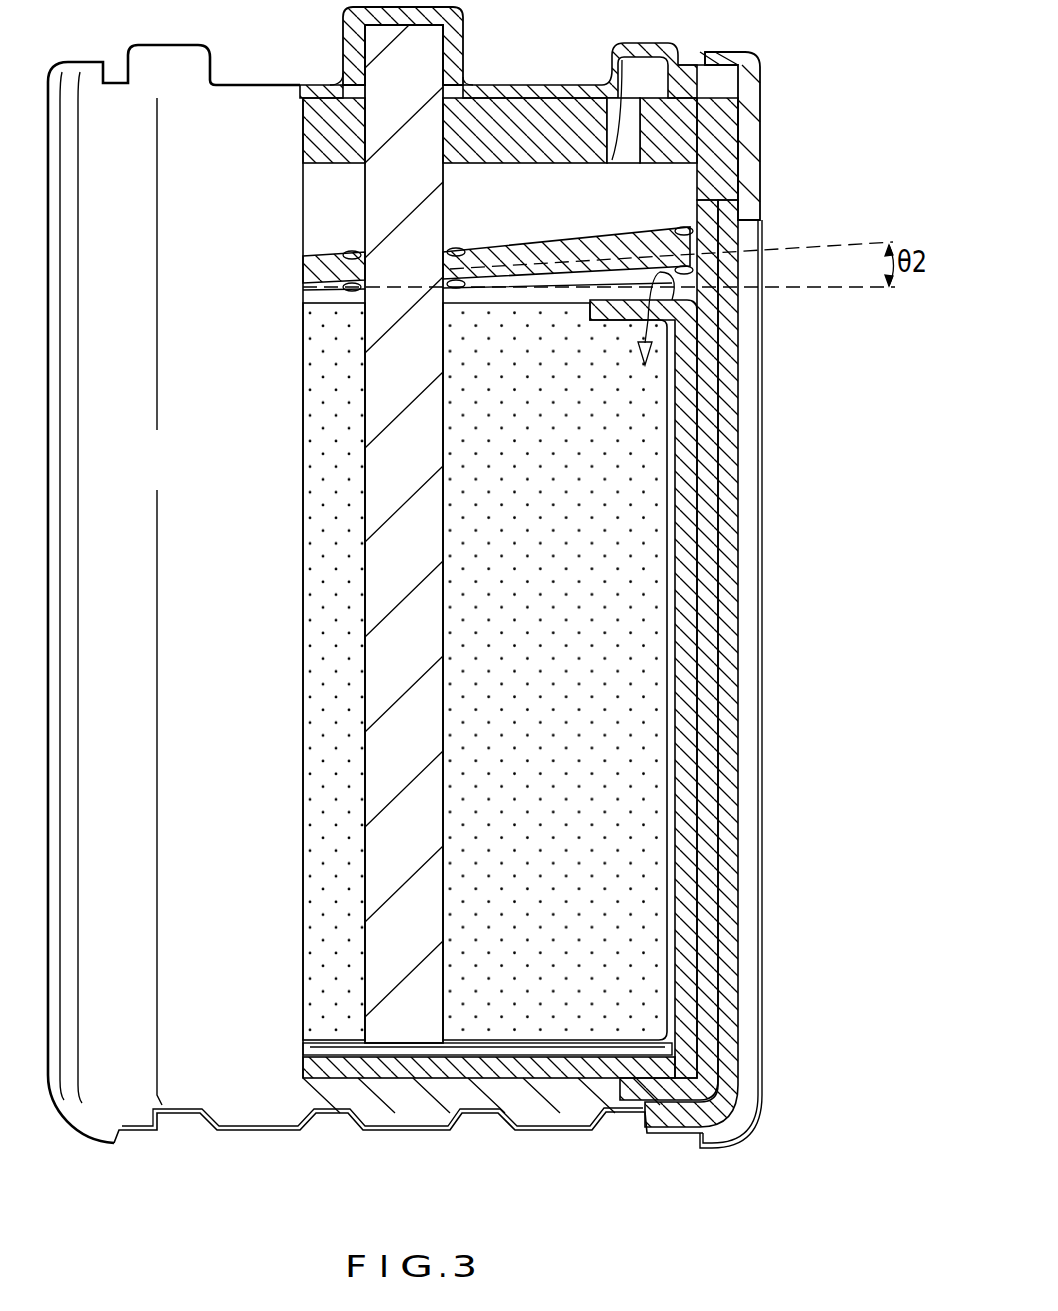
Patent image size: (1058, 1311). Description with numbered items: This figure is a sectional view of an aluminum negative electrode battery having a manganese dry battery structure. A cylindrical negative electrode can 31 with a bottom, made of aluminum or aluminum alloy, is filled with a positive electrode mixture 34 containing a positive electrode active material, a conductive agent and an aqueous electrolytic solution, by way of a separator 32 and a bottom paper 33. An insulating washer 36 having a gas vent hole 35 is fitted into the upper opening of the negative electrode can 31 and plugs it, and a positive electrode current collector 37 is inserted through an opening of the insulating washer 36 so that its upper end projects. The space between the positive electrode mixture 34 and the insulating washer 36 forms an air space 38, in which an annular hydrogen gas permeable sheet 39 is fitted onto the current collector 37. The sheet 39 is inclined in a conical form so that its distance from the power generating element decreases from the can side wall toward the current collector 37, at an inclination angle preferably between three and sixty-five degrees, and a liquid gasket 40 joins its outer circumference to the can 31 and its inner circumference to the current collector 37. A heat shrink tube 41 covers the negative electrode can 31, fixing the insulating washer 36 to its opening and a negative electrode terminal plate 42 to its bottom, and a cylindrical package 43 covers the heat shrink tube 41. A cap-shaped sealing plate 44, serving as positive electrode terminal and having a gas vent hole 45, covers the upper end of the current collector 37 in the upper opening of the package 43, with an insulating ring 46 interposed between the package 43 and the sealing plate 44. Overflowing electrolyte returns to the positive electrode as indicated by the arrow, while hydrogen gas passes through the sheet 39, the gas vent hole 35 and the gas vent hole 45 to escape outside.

The negative electrode can 31 is at (703, 851).
The separator 32 is at (683, 774).
The bottom paper 33 is at (465, 1050).
The positive electrode mixture 34 is at (648, 528).
The gas vent hole 35 is at (614, 108).
The insulating washer 36 is at (572, 90).
The positive electrode current collector 37 is at (378, 392).
The air space 38 is at (690, 186).
The hydrogen gas permeable sheet 39 is at (672, 250).
The liquid gasket 40 is at (350, 256).
The heat shrink tube 41 is at (725, 946).
The negative electrode terminal plate 42 is at (555, 1127).
The cylindrical package 43 is at (748, 1004).
The sealing plate 44 is at (460, 31).
The gas vent hole 45 is at (683, 64).
The insulating ring 46 is at (765, 74).